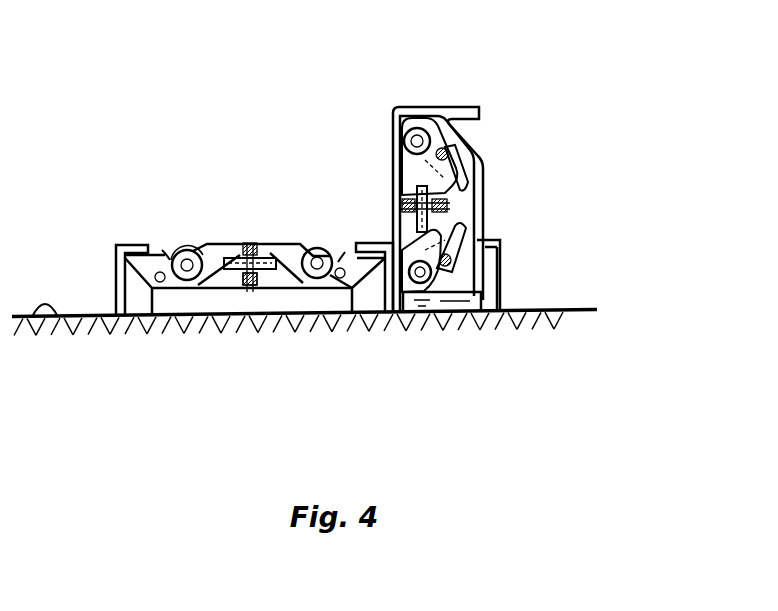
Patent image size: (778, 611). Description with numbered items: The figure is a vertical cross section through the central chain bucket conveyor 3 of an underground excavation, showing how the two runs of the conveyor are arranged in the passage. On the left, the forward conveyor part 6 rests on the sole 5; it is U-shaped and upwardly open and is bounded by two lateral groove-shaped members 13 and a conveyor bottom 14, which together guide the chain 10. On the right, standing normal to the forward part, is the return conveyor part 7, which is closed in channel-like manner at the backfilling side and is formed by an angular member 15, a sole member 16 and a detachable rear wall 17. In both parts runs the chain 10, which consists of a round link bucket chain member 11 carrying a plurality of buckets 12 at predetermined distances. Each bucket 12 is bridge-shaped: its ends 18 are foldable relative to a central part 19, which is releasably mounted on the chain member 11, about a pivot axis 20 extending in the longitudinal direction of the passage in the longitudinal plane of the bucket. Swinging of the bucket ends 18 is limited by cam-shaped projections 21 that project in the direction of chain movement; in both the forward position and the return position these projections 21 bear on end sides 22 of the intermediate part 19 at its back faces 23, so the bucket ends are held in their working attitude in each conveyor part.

The chain bucket conveyor 3 is at (260, 74).
The sole 5 is at (56, 314).
The forward conveyor part 6 is at (205, 215).
The return conveyor part 7 is at (481, 86).
The chain 10 is at (259, 233).
The round link bucket chain member 11 is at (248, 301).
The bucket 12 is at (292, 222).
The lateral groove-shaped member 13 is at (114, 249).
The conveyor bottom 14 is at (213, 289).
The angular member 15 is at (396, 108).
The sole member 16 is at (428, 297).
The detachable rear wall 17 is at (486, 163).
The bucket end 18 is at (137, 252).
The central part 19 is at (229, 255).
The pivot axis 20 is at (192, 253).
The cam-shaped projection 21 is at (165, 287).
The end side 22 is at (154, 256).
The back face 23 is at (462, 135).